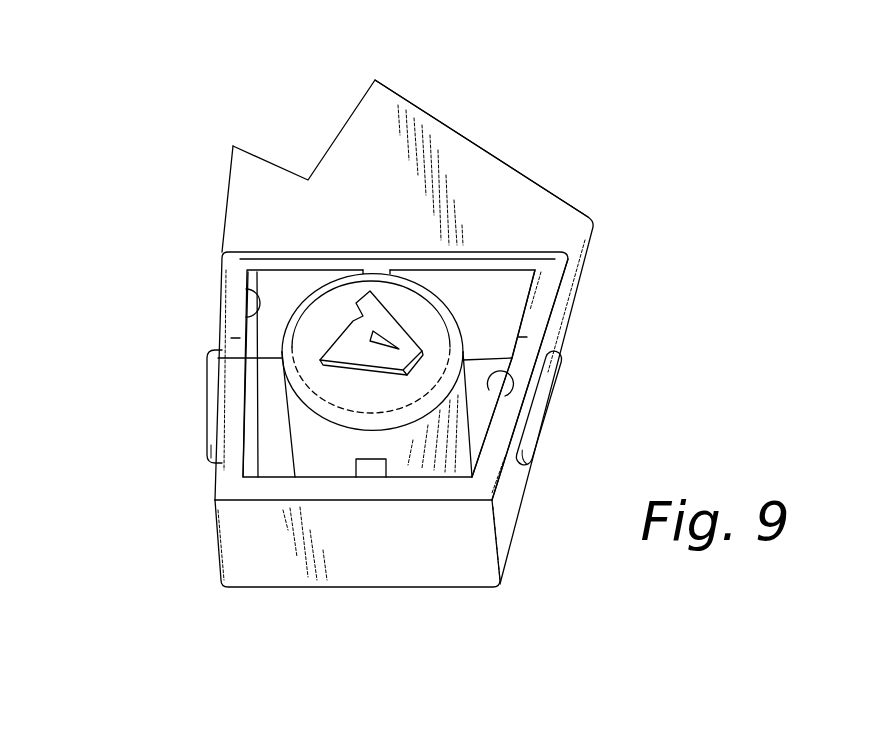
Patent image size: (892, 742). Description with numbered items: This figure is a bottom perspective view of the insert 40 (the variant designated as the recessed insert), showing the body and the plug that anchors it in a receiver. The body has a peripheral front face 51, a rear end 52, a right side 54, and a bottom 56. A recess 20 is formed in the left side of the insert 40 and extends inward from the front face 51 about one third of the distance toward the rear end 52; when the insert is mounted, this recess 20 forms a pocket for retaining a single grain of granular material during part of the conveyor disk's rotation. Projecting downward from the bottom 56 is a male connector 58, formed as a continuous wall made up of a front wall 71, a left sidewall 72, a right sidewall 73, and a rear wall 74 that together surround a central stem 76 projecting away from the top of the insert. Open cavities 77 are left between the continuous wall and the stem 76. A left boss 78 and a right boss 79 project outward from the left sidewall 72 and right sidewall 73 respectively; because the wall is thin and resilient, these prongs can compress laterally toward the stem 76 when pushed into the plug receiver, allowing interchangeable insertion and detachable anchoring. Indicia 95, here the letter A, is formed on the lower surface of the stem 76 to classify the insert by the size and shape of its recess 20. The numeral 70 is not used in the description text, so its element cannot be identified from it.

The insert 40 is at (150, 100).
The recess 20 is at (307, 128).
The front face 51 is at (460, 127).
The housing body 70 is at (205, 243).
The front wall 71 is at (328, 260).
The bottom 56 is at (465, 272).
The male connector 58 is at (560, 292).
The right sidewall 73 is at (535, 312).
The left sidewall 72 is at (230, 326).
The cavities 77 is at (250, 288).
The stem 76 is at (305, 440).
The indicia 95 is at (402, 332).
The left boss 78 is at (207, 423).
The right boss 79 is at (540, 420).
The right side 54 is at (512, 503).
The rear wall 74 is at (400, 495).
The rear end 52 is at (370, 572).